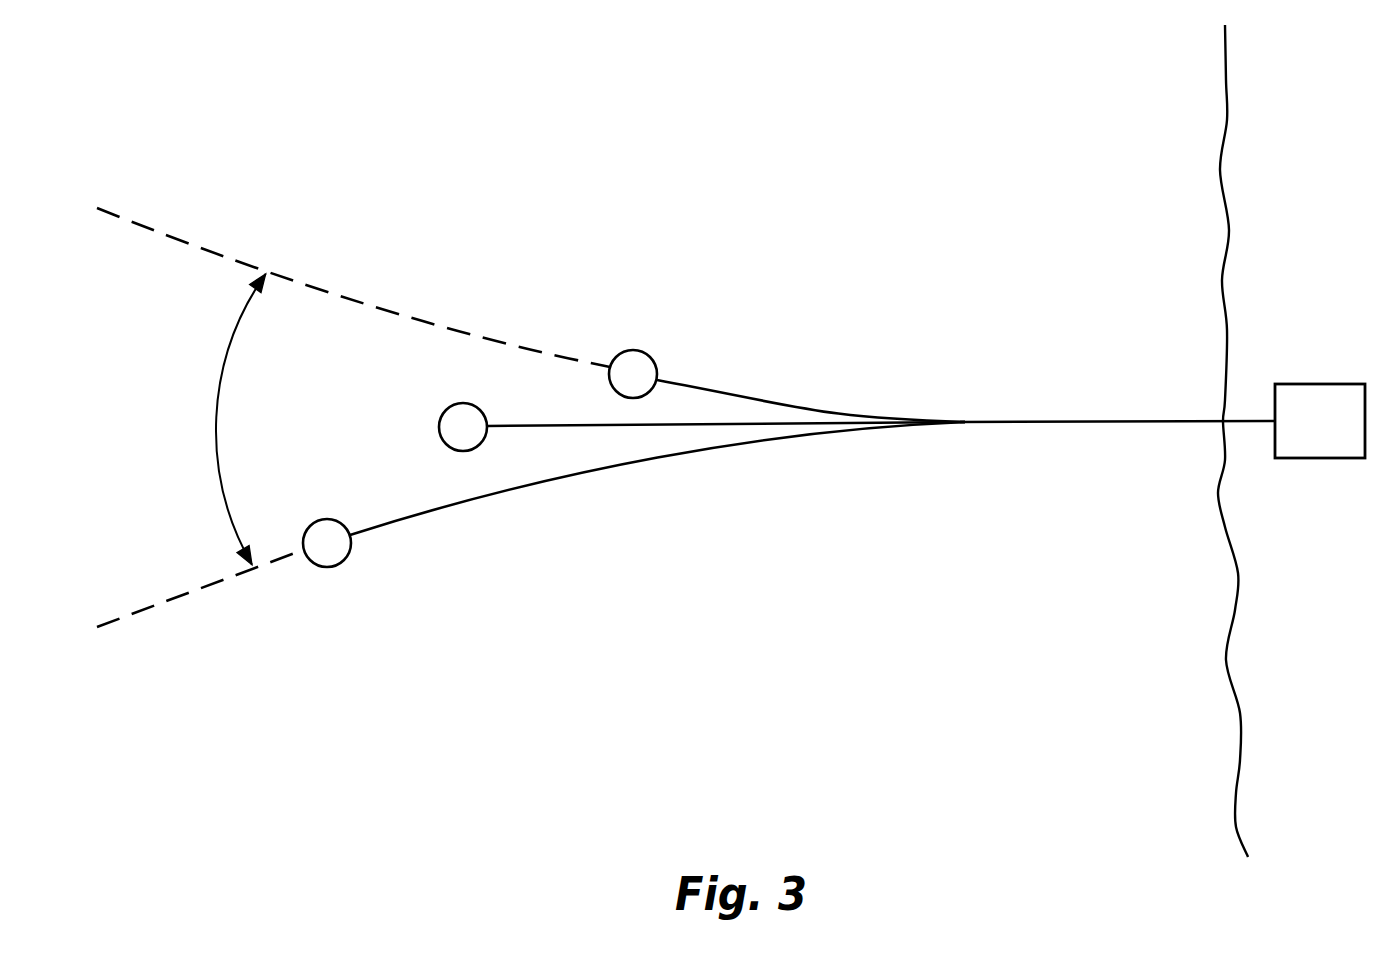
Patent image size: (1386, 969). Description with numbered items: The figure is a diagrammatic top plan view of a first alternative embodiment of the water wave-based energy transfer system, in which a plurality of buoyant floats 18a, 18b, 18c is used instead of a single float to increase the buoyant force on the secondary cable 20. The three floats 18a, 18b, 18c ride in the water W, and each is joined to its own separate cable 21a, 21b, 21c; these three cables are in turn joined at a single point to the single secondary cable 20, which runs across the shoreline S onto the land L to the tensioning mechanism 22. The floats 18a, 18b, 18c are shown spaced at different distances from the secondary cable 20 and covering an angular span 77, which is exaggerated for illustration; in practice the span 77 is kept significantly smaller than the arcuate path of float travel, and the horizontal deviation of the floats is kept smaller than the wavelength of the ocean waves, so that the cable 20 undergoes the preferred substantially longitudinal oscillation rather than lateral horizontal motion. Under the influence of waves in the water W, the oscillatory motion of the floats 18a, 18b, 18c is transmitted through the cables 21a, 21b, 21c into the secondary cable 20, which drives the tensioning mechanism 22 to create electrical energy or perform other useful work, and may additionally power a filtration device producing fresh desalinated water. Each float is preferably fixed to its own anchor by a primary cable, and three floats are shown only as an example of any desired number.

The shoreline S is at (1226, 118).
The water W is at (549, 142).
The land L is at (1354, 226).
The angular span 77 is at (215, 417).
The buoyant float 18a is at (328, 567).
The buoyant float 18b is at (440, 412).
The buoyant float 18c is at (645, 352).
The separate cable 21a is at (400, 521).
The separate cable 21b is at (553, 426).
The separate cable 21c is at (745, 397).
The secondary cable 20 is at (1093, 421).
The tensioning mechanism 22 is at (1318, 384).